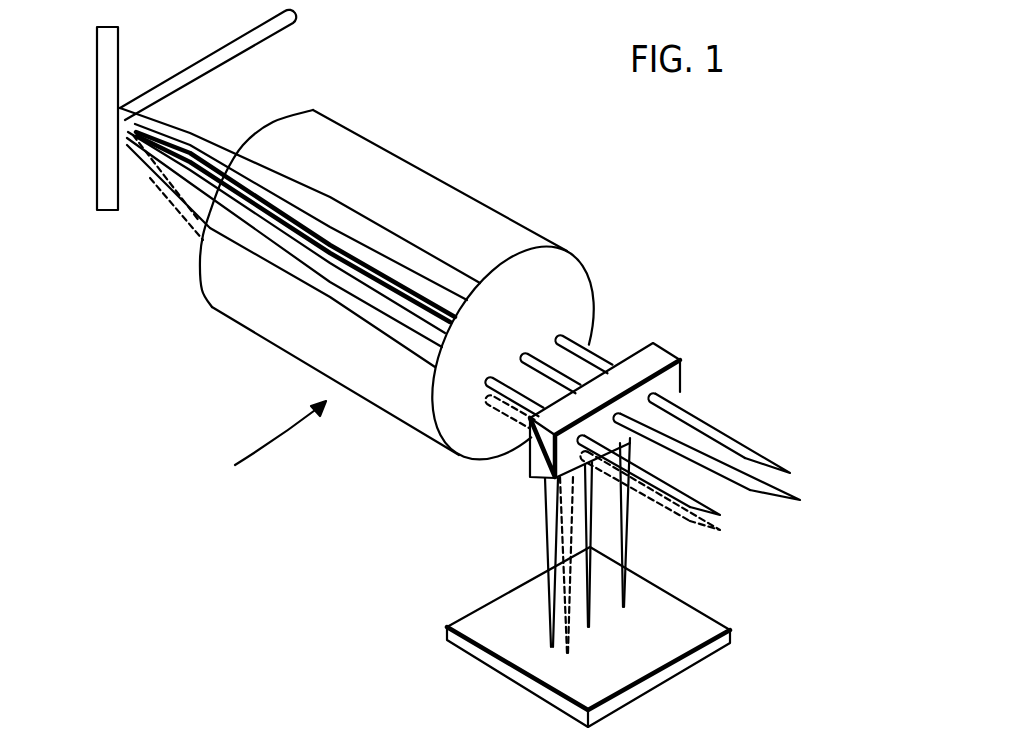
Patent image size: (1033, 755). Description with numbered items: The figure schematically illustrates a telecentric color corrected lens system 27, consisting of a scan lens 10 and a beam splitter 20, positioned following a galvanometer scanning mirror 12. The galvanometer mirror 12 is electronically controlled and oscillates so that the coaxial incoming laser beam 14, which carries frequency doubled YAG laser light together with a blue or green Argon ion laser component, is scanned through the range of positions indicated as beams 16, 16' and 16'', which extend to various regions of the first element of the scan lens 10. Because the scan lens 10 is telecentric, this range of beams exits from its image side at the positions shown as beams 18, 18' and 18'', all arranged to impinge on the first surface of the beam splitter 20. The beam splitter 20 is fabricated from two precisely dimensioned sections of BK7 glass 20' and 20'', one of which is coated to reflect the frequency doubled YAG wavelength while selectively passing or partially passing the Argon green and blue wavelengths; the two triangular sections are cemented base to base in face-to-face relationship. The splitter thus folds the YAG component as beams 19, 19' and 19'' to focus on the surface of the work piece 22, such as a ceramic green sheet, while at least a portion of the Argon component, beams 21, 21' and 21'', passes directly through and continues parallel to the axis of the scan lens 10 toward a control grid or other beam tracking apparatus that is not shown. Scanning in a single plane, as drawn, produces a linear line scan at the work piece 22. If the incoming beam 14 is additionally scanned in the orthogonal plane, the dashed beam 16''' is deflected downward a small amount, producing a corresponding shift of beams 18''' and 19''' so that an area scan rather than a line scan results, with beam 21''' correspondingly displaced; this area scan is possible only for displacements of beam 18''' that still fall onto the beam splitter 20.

The scan lens 10 is at (457, 202).
The galvanometer scanning mirror 12 is at (97, 113).
The incoming laser beam 14 is at (233, 47).
The scanned light beam 16 is at (300, 167).
The scanned light beam 16' is at (295, 194).
The scanned light beam 16'' is at (286, 239).
The orthogonally scanned beam 16''' is at (272, 251).
The exit beam 18 is at (606, 323).
The exit beam 18' is at (610, 343).
The exit beam 18'' is at (503, 448).
The shifted exit beam 18''' is at (465, 455).
The folded YAG beam 19 is at (717, 409).
The folded YAG beam 19' is at (716, 433).
The folded YAG beam 19'' is at (582, 541).
The shifted folded YAG beam 19''' is at (661, 569).
The beam splitter 20 is at (649, 401).
The glass section 20' is at (568, 458).
The glass section 20'' is at (648, 363).
The Argon laser component beam 21 is at (774, 435).
The Argon laser component beam 21' is at (729, 471).
The Argon laser component beam 21'' is at (653, 499).
The displaced Argon beam 21''' is at (654, 524).
The work piece 22 is at (700, 627).
The telecentric color corrected lens system 27 is at (266, 440).